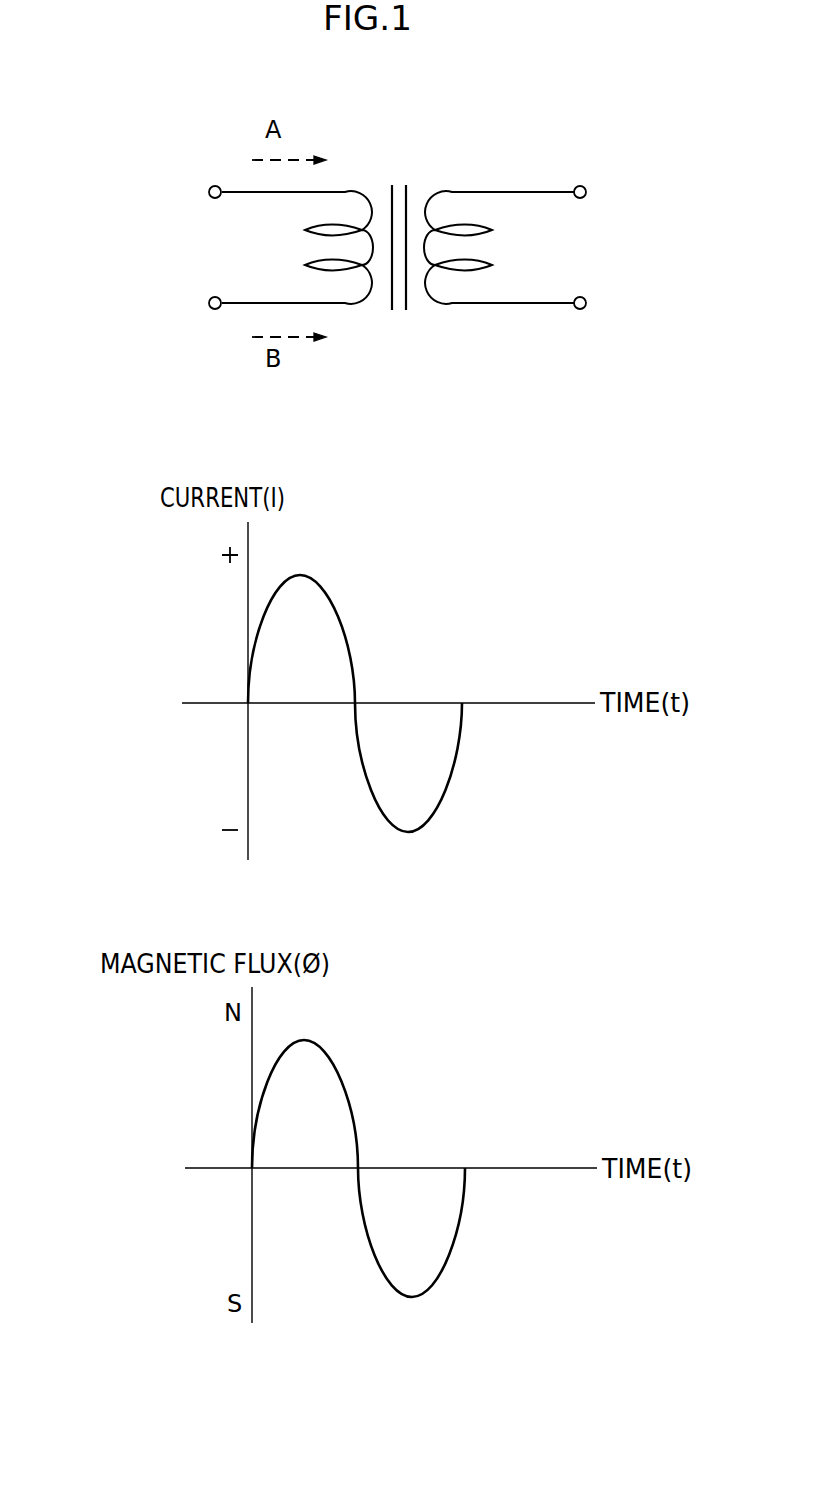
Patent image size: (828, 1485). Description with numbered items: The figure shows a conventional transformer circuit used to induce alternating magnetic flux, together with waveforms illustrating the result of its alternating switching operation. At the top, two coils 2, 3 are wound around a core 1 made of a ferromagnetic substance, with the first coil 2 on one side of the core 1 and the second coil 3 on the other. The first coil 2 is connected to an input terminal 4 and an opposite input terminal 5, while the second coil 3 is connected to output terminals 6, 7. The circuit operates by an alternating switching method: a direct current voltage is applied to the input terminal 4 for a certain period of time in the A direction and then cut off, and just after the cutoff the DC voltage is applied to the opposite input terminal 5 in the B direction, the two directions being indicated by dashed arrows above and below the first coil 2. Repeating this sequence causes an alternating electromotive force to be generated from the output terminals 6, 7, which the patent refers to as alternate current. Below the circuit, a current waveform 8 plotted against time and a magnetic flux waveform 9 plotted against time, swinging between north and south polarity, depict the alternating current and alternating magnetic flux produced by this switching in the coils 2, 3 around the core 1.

The core 1 is at (406, 302).
The coil 2 is at (305, 231).
The coil 3 is at (492, 231).
The input terminal 4 is at (209, 192).
The opposite input terminal 5 is at (209, 303).
The output terminal 6 is at (586, 192).
The output terminal 7 is at (586, 303).
The current waveform 8 is at (258, 636).
The magnetic flux waveform 9 is at (261, 1102).